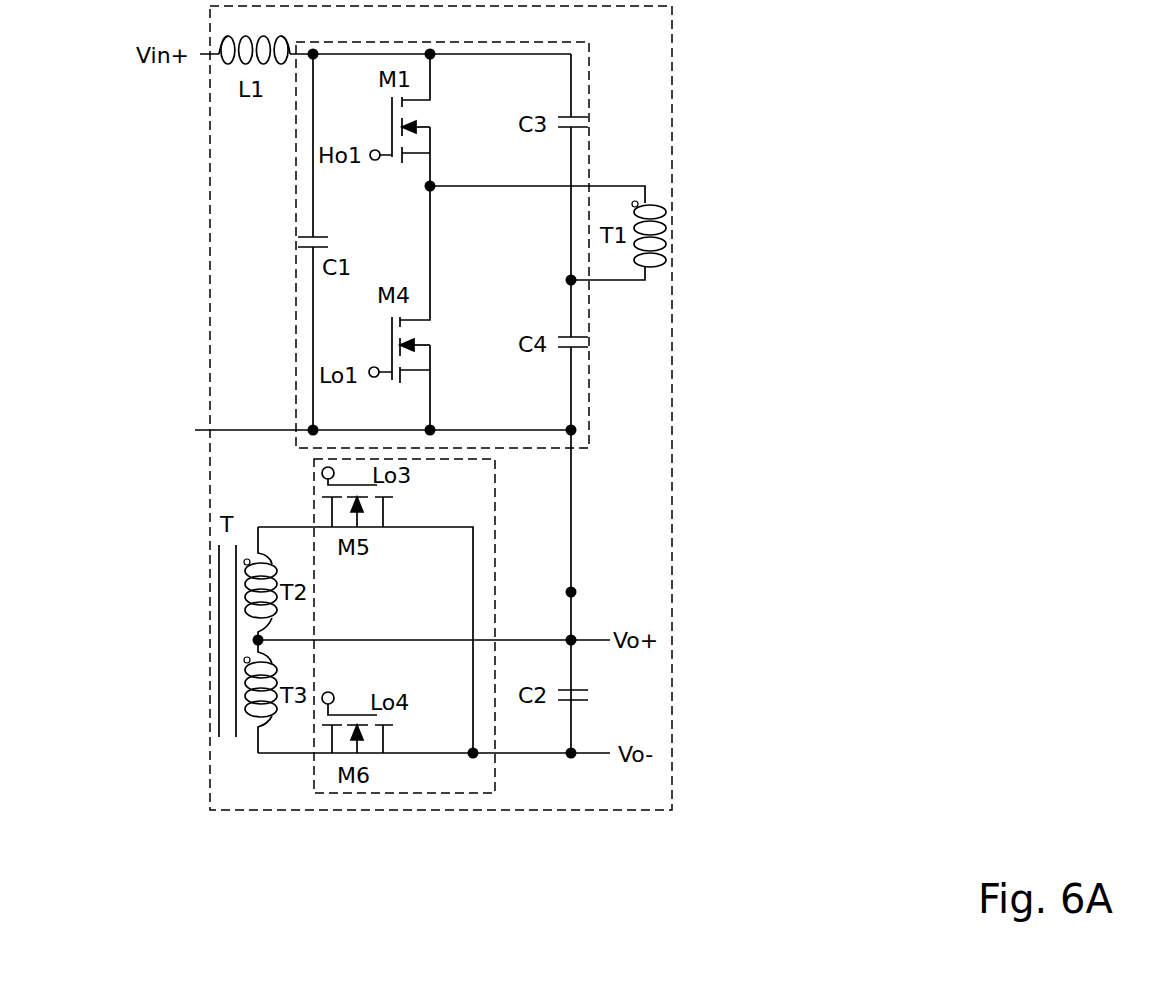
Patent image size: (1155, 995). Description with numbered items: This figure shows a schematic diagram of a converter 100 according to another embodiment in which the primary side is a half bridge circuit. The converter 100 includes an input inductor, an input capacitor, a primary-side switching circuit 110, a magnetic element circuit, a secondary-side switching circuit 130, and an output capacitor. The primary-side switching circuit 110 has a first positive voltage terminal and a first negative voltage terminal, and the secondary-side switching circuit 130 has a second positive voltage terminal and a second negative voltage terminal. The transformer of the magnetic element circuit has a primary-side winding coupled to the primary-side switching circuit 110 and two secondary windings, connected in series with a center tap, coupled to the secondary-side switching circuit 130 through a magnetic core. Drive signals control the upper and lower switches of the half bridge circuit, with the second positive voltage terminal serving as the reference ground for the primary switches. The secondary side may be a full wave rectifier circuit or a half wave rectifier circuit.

The converter 100 is at (672, 39).
The primary-side switching circuit 110 is at (590, 117).
The secondary-side switching circuit 130 is at (430, 793).